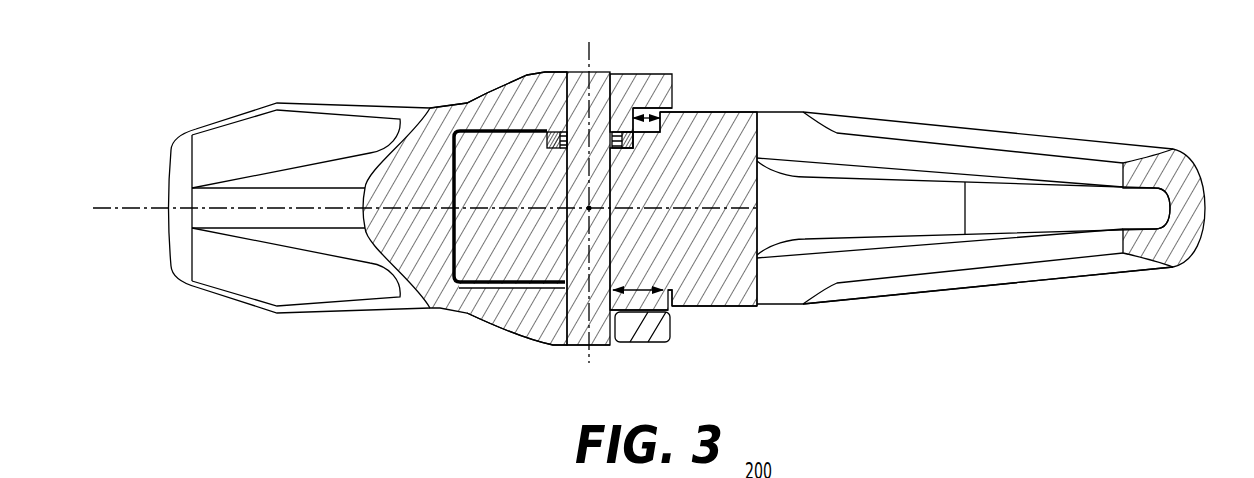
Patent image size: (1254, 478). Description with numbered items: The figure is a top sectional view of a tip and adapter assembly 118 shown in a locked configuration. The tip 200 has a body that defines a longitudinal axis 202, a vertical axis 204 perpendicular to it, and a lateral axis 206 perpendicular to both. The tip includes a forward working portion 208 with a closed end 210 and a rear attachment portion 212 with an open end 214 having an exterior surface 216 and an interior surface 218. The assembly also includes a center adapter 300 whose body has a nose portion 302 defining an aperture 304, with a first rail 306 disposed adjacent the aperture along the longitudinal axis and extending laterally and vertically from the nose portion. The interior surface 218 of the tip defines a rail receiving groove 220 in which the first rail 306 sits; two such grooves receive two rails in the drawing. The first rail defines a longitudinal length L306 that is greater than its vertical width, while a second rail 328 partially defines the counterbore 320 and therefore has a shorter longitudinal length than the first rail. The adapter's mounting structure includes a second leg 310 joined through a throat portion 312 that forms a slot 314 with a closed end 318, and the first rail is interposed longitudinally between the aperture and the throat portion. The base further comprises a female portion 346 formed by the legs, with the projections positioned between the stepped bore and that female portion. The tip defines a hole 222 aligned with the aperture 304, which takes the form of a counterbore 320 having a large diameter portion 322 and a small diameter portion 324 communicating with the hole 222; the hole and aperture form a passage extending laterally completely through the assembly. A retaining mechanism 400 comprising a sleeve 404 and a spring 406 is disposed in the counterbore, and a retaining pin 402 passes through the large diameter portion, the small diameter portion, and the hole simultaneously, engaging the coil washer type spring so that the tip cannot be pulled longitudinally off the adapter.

The tip and adapter assembly 118 is at (784, 65).
The tip 200 is at (382, 100).
The longitudinal axis 202 is at (107, 210).
The vertical axis 204 is at (590, 68).
The lateral axis 206 is at (589, 210).
The forward working portion 208 is at (245, 275).
The closed end 210 is at (168, 170).
The rear attachment portion 212 is at (536, 70).
The open end 214 is at (678, 305).
The exterior surface 216 is at (547, 344).
The interior surface 218 is at (678, 312).
The rail receiving groove 220 is at (668, 292).
The hole 222 is at (615, 126).
The center adapter 300 is at (886, 110).
The nose portion 302 is at (468, 272).
The aperture 304 is at (612, 197).
The first rail 306 is at (670, 314).
The longitudinal length L306 is at (637, 290).
The second leg 310 is at (1050, 283).
The throat portion 312 is at (740, 307).
The slot 314 is at (1008, 200).
The closed end 318 is at (757, 190).
The counterbore 320 is at (553, 130).
The large diameter portion 322 is at (660, 134).
The small diameter portion 324 is at (613, 253).
The second rail 328 is at (655, 112).
The female portion 346 is at (1160, 278).
The retaining mechanism 400 is at (634, 106).
The retaining pin 402 is at (582, 328).
The sleeve 404 is at (632, 148).
The spring 406 is at (556, 148).